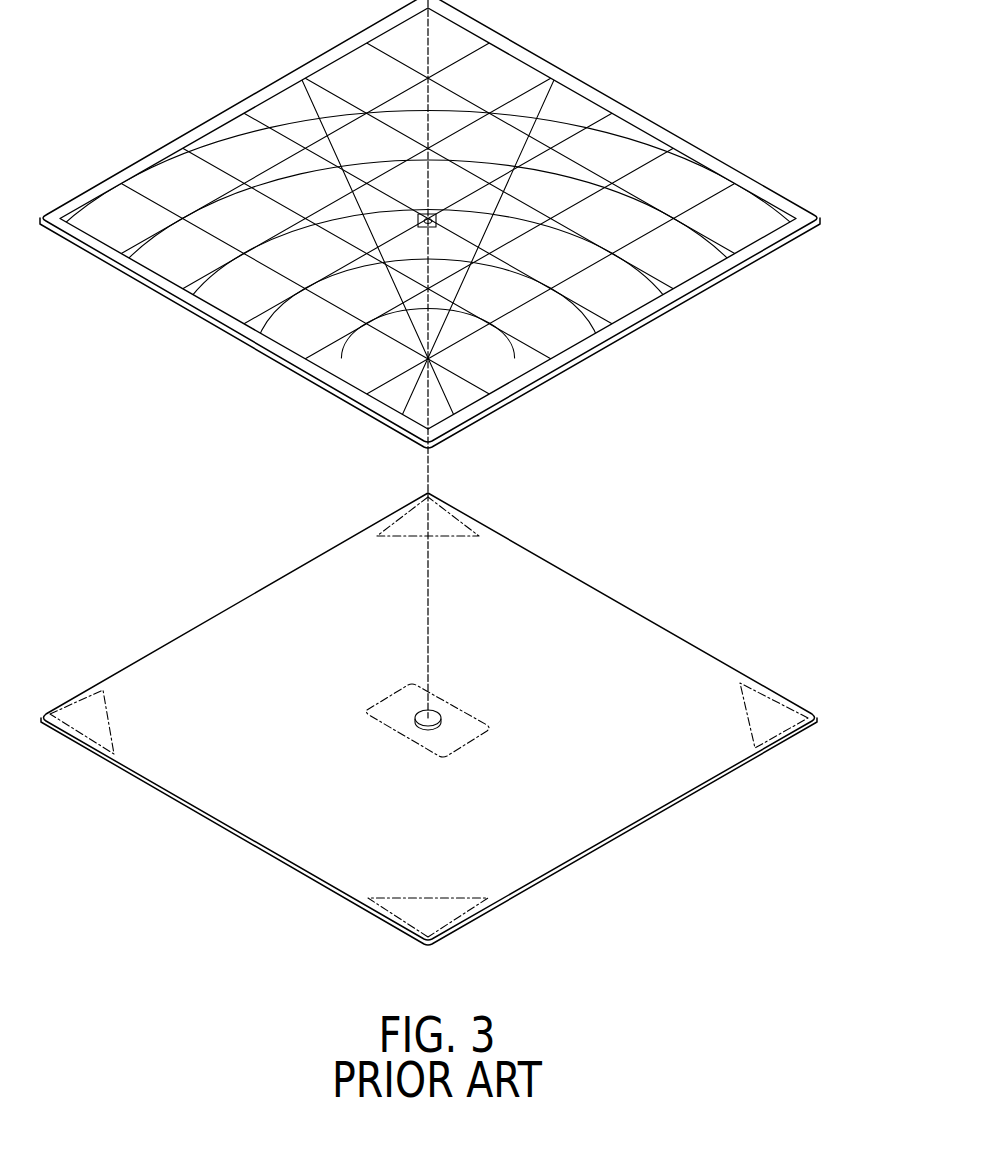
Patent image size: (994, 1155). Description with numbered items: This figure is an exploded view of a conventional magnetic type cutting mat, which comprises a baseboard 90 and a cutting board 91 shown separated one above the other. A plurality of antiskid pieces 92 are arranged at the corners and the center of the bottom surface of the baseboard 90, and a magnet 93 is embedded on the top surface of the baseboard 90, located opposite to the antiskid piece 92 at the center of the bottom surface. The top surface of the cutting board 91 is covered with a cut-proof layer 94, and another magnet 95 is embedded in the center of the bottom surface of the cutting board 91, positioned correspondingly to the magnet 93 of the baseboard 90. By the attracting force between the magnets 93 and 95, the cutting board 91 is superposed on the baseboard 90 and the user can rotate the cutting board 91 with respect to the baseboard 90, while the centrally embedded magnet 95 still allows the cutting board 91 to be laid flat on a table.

The baseboard 90 is at (640, 853).
The cutting board 91 is at (680, 330).
The antiskid pieces 92 is at (468, 712).
The magnet 93 is at (434, 710).
The cut-proof layer 94 is at (720, 163).
The magnet 95 is at (437, 210).